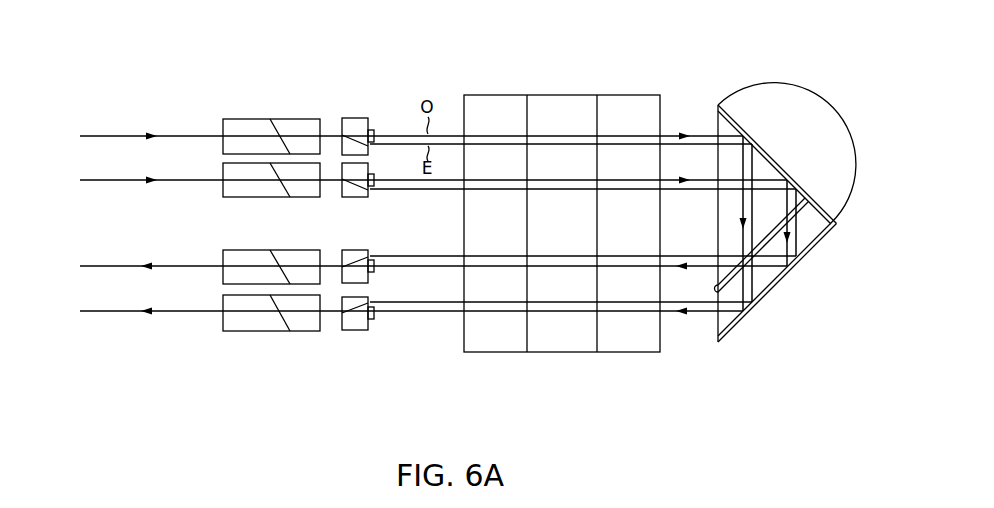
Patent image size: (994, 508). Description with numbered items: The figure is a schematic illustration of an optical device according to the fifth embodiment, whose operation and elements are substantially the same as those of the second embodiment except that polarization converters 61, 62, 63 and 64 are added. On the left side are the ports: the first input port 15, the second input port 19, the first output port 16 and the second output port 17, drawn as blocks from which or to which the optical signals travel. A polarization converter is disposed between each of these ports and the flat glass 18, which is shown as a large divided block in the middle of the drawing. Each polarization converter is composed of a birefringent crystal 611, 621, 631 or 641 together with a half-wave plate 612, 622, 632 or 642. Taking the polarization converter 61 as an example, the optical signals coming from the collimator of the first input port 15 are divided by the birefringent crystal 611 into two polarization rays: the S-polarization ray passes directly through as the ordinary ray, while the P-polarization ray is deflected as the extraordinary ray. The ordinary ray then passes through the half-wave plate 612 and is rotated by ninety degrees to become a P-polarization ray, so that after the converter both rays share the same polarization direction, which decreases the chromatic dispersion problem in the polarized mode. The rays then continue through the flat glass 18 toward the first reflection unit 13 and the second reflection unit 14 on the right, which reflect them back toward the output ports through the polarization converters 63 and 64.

The first reflection unit 13 is at (803, 237).
The second reflection unit 14 is at (760, 165).
The first input port 15 is at (297, 128).
The first output port 16 is at (300, 320).
The second output port 17 is at (252, 277).
The flat glass 18 is at (499, 102).
The second input port 19 is at (246, 172).
The polarization converter 61 is at (342, 67).
The birefringent crystal 611 is at (356, 122).
The half-wave plate 612 is at (373, 131).
The polarization converter 62 is at (358, 229).
The birefringent crystal 621 is at (353, 198).
The half-wave plate 622 is at (375, 187).
The polarization converter 63 is at (445, 373).
The birefringent crystal 631 is at (360, 280).
The half-wave plate 632 is at (374, 270).
The polarization converter 64 is at (385, 427).
The birefringent crystal 641 is at (353, 325).
The half-wave plate 642 is at (372, 320).